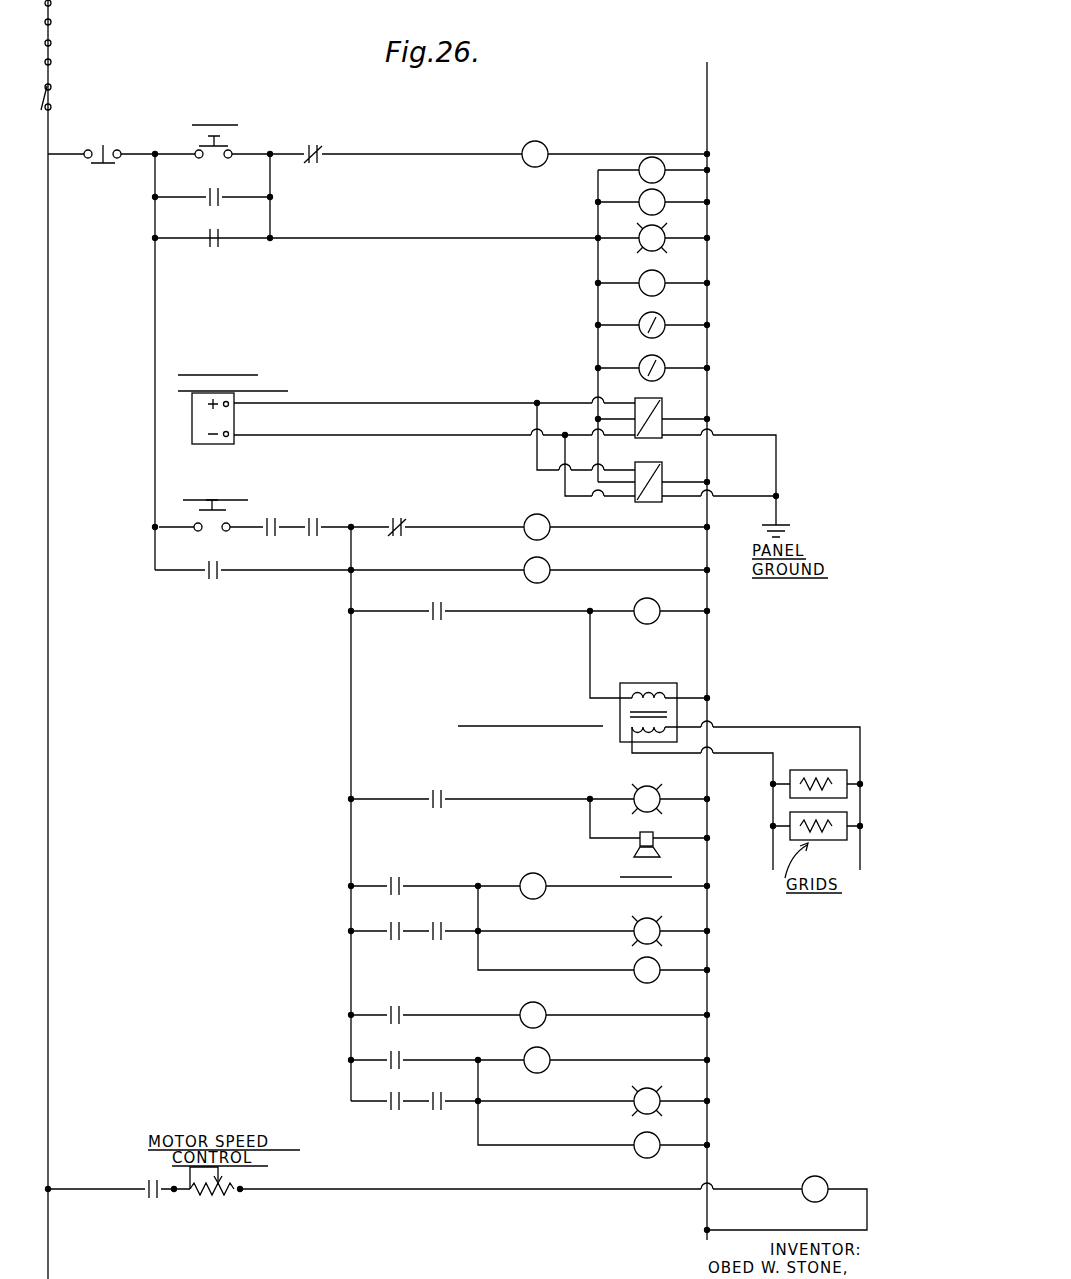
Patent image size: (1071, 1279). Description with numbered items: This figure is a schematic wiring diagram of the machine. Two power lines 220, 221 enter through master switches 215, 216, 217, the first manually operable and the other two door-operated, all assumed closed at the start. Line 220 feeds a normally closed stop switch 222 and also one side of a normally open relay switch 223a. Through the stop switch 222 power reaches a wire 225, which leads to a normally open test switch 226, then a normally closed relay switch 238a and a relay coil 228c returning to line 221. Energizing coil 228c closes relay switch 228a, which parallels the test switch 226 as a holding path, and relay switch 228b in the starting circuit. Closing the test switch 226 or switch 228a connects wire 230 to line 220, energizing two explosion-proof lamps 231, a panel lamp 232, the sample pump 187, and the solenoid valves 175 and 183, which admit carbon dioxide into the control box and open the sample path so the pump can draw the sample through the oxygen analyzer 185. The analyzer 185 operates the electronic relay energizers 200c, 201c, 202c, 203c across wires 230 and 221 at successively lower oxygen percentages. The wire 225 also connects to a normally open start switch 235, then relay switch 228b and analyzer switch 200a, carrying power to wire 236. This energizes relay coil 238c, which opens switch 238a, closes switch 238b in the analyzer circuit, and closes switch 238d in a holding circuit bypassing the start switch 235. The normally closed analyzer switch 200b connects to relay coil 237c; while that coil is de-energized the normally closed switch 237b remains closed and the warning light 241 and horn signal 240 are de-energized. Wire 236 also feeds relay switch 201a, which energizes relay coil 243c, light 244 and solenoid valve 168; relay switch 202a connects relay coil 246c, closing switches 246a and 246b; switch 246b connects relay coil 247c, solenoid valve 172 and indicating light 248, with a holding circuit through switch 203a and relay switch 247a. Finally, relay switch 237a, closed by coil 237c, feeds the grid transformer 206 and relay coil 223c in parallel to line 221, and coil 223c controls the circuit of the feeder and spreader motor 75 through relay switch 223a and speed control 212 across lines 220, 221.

The master switch 215 is at (52, 14).
The master switch 216 is at (51, 51).
The master switch 217 is at (52, 99).
The power line 220 is at (45, 180).
The power line 221 is at (710, 104).
The stop switch 222 is at (120, 147).
The wire 225 is at (155, 292).
The test switch 226 is at (232, 147).
The relay switch 228a is at (215, 190).
The relay switch 228b is at (275, 515).
The relay coil 228c is at (537, 142).
The wire 230 is at (400, 237).
The explosion-proof lamps 231 is at (640, 195).
The lamp 232 is at (655, 235).
The sample pump 187 is at (640, 278).
The solenoid valve 175 is at (652, 325).
The solenoid valve 183 is at (652, 368).
The oxygen analyzer 185 is at (233, 397).
The analyzer switch 200a is at (318, 514).
The analyzer switch 200b is at (402, 516).
The relay energizer 200c is at (635, 401).
The electronic relay switch 201a is at (393, 877).
The relay energizer 201c is at (650, 438).
The relay switch 202a is at (393, 1006).
The relay energizer 202c is at (647, 470).
The switch 203a is at (395, 1115).
The relay energizer 203c is at (644, 505).
The start switch 235 is at (233, 515).
The wire 236 is at (351, 690).
The relay switch 237a is at (442, 600).
The relay switch 237b is at (437, 790).
The relay coil 237c is at (527, 518).
The relay switch 238a is at (322, 148).
The relay switch 238b is at (215, 250).
The relay coil 238c is at (527, 560).
The relay switch 238d is at (215, 598).
The relay switch 223a is at (150, 1203).
The relay coil 223c is at (643, 600).
The horn signal 240 is at (637, 842).
The warning light 241 is at (633, 788).
The relay coil 243c is at (525, 875).
The light 244 is at (633, 936).
The relay switch 246a is at (395, 945).
The relay switch 246b is at (398, 1048).
The relay coil 246c is at (548, 1020).
The relay switch 247a is at (437, 1115).
The relay coil 247c is at (550, 1070).
The indicating light 248 is at (635, 1107).
The solenoid valve 168 is at (635, 975).
The solenoid valve 172 is at (635, 1150).
The high voltage transformer 206 is at (620, 733).
The speed control 212 is at (222, 1205).
The feeder and spreader motor 75 is at (822, 1176).